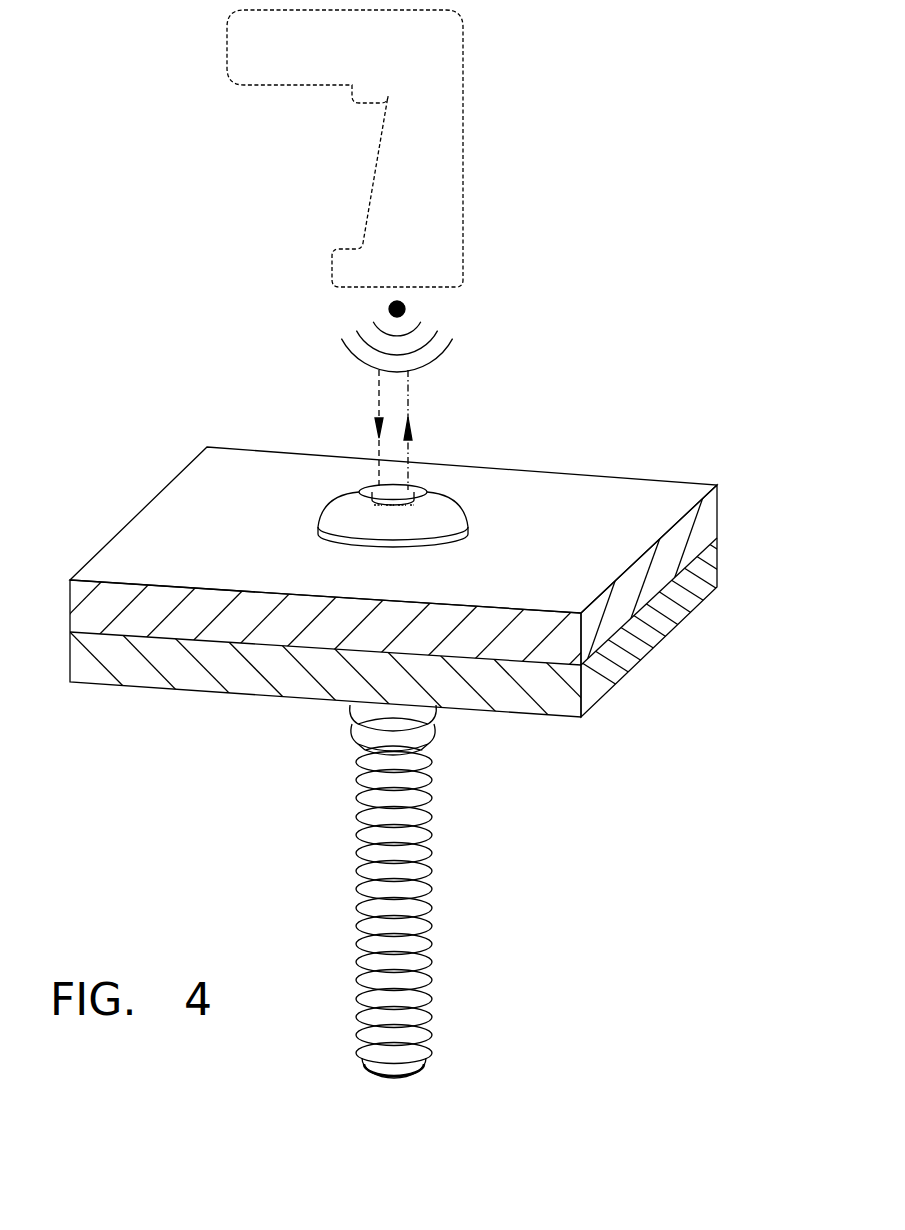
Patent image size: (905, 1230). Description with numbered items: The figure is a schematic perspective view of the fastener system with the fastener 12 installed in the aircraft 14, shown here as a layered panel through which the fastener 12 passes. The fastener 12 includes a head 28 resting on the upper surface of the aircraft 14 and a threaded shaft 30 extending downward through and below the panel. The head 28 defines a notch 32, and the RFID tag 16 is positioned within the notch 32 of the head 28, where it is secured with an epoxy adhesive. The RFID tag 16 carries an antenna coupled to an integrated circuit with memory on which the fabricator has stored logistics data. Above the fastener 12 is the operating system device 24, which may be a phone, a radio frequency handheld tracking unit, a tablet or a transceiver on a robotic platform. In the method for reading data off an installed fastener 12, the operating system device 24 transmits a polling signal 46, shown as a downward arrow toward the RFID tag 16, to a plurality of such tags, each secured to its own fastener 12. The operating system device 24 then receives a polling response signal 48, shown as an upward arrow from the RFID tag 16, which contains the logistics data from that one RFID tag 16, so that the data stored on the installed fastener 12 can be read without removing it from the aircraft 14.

The fastener 12 is at (440, 788).
The aircraft 14 is at (603, 492).
The RFID tag 16 is at (398, 497).
The operating system device 24 is at (427, 78).
The head 28 is at (454, 500).
The shaft 30 is at (440, 879).
The notch 32 is at (371, 487).
The polling signal 46 is at (378, 390).
The polling response signal 48 is at (410, 415).